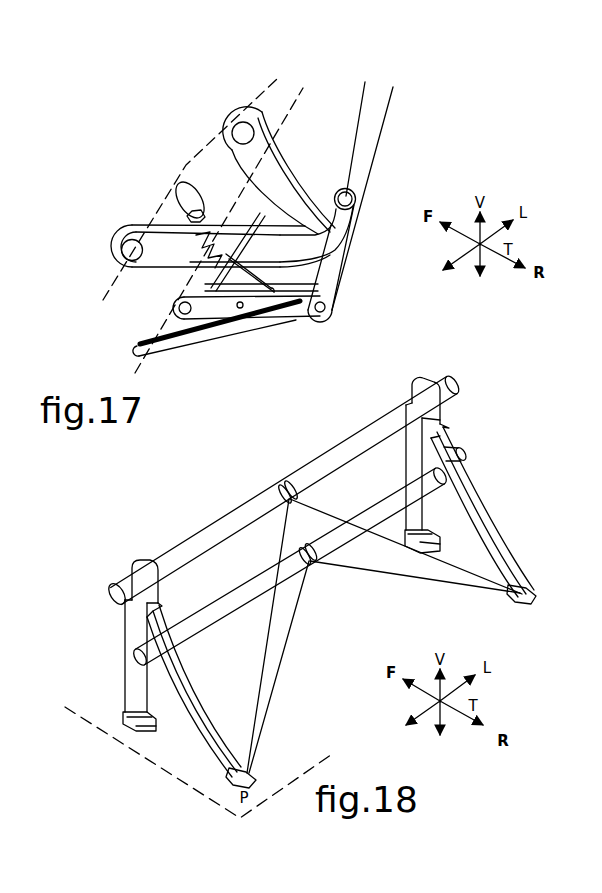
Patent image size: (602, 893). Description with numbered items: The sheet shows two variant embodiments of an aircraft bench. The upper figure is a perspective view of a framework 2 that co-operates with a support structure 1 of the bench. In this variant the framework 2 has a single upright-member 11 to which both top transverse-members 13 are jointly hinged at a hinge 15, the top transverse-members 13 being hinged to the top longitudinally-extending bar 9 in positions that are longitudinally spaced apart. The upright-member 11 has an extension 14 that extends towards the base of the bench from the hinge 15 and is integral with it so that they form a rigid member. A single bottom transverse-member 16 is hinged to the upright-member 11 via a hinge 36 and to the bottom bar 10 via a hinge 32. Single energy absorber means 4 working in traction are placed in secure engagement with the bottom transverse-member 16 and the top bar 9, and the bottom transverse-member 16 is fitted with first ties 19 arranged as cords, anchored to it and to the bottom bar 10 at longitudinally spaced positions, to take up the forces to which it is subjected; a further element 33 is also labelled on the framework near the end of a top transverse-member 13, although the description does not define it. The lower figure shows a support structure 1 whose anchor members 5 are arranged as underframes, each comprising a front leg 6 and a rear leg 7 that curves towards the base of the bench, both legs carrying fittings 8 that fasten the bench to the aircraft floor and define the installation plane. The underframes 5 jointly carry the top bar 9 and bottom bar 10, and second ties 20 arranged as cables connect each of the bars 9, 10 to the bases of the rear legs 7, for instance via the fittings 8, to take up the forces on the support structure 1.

In FIG. 17, the support structure 1 is at (187, 152).
In FIG. 18, the support structure 1 is at (235, 487).
In FIG. 17, the framework 2 is at (397, 132).
In FIG. 17, the energy absorber means 4 is at (205, 276).
In FIG. 18, the anchor member 5 is at (499, 498).
In FIG. 18, the front leg 6 is at (403, 450).
In FIG. 18, the rear leg 7 is at (497, 539).
In FIG. 18, the fittings 8 is at (437, 537).
In FIG. 17, the top bar 9 is at (100, 284).
In FIG. 18, the top bar 9 is at (323, 446).
In FIG. 17, the bottom bar 10 is at (127, 362).
In FIG. 18, the bottom bar 10 is at (357, 510).
In FIG. 17, the upright-member 11 is at (357, 118).
In FIG. 17, the top transverse-member 13 is at (290, 164).
In FIG. 17, the extension 14 is at (347, 281).
In FIG. 17, the hinge 15 is at (356, 195).
In FIG. 17, the bottom transverse-member 16 is at (175, 303).
In FIG. 17, the first ties 19 is at (192, 350).
In FIG. 17, the second ties 20 is at (262, 280).
In FIG. 18, the second ties 20 is at (273, 547).
In FIG. 17, the hinge 32 is at (212, 312).
In FIG. 17, the arm body 33 is at (109, 257).
In FIG. 17, the hinge 36 is at (333, 309).